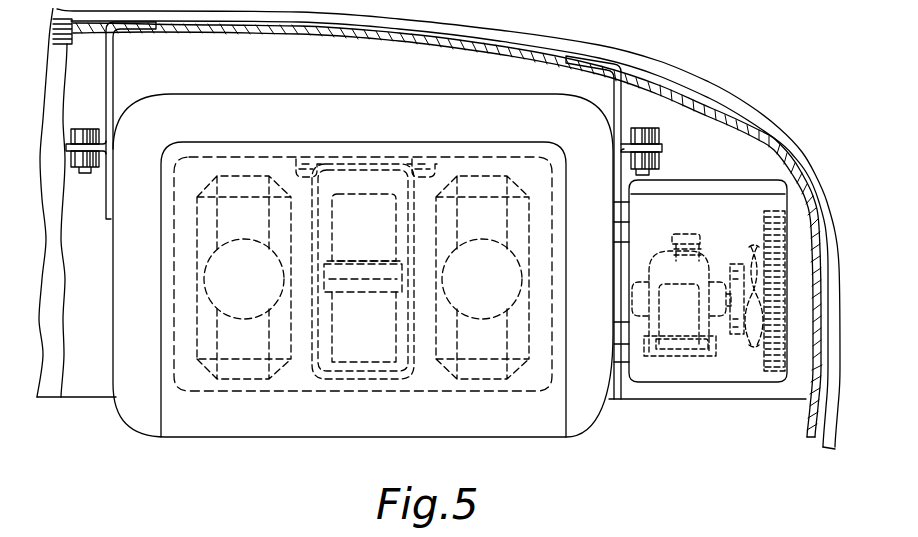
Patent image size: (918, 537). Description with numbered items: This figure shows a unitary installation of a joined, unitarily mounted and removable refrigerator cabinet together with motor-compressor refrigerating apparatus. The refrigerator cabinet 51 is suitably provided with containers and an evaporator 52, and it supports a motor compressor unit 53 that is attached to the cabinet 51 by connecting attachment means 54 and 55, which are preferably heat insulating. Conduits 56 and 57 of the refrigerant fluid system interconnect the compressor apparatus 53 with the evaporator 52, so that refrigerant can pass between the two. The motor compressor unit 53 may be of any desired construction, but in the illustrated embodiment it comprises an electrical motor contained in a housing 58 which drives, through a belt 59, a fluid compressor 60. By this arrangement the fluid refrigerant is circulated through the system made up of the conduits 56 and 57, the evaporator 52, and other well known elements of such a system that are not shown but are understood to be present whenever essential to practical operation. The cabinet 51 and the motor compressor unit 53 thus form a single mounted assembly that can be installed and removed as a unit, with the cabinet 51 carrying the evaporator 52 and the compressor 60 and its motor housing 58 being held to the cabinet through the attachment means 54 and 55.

The refrigerator cabinet 51 is at (152, 405).
The evaporator 52 is at (327, 367).
The motor compressor unit 53 is at (680, 202).
The attachment means 54 is at (632, 213).
The attachment means 55 is at (618, 363).
The conduit 56 is at (620, 243).
The conduit 57 is at (600, 405).
The housing 58 is at (790, 195).
The belt 59 is at (727, 337).
The fluid compressor 60 is at (688, 238).